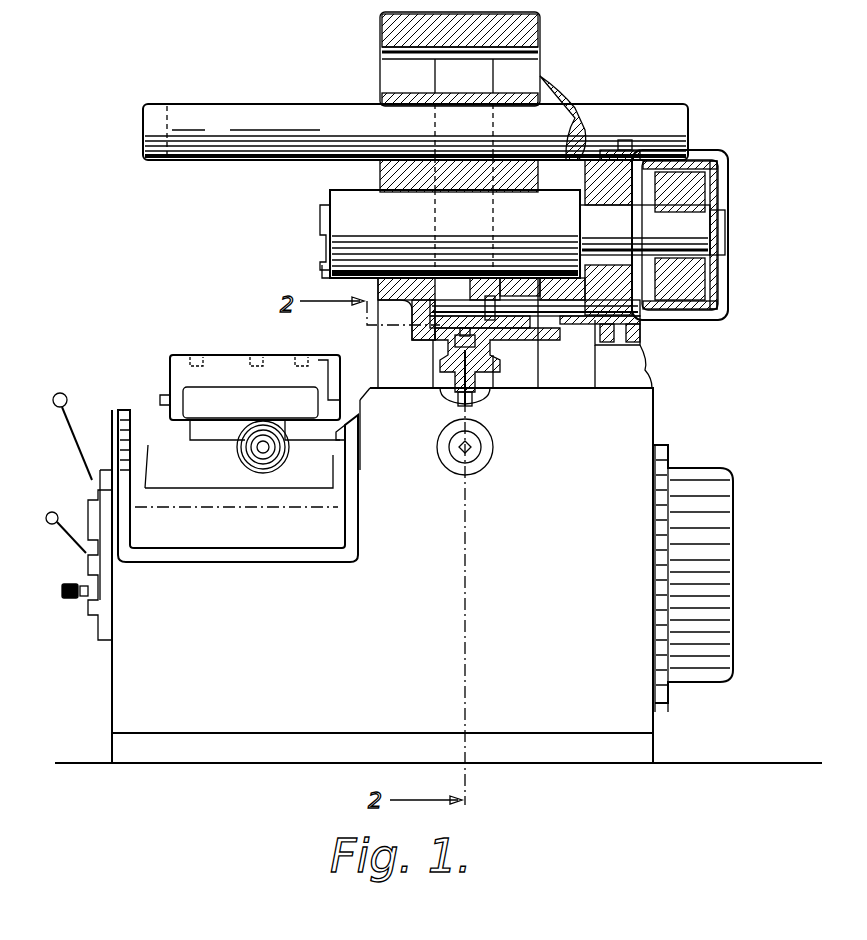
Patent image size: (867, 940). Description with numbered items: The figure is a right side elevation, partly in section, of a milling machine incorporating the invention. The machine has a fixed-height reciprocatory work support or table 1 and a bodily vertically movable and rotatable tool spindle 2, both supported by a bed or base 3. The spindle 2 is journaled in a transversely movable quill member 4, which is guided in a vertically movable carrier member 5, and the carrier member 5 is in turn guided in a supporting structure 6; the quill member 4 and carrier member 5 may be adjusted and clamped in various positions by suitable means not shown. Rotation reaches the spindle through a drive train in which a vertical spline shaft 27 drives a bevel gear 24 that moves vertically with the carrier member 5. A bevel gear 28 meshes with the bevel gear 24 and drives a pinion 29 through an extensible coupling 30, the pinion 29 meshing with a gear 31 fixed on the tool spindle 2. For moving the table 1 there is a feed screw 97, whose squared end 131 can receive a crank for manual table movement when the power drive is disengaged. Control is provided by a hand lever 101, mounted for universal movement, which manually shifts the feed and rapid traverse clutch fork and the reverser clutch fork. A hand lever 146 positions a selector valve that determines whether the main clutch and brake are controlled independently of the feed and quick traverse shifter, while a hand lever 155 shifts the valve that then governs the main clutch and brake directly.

The work support or table 1 is at (222, 355).
The tool spindle 2 is at (324, 249).
The bed or base 3 is at (612, 448).
The quill member 4 is at (332, 280).
The carrier member 5 is at (387, 176).
The supporting structure 6 is at (393, 30).
The bevel gear 24 is at (440, 362).
The vertical spline shaft 27 is at (449, 404).
The bevel gear 28 is at (487, 290).
The pinion 29 is at (603, 332).
The extensible coupling 30 is at (561, 326).
The gear 31 is at (606, 186).
The feed screw 97 is at (250, 448).
The hand lever 101 is at (76, 440).
The squared end 131 is at (282, 458).
The hand lever 146 is at (90, 600).
The hand lever 155 is at (72, 520).